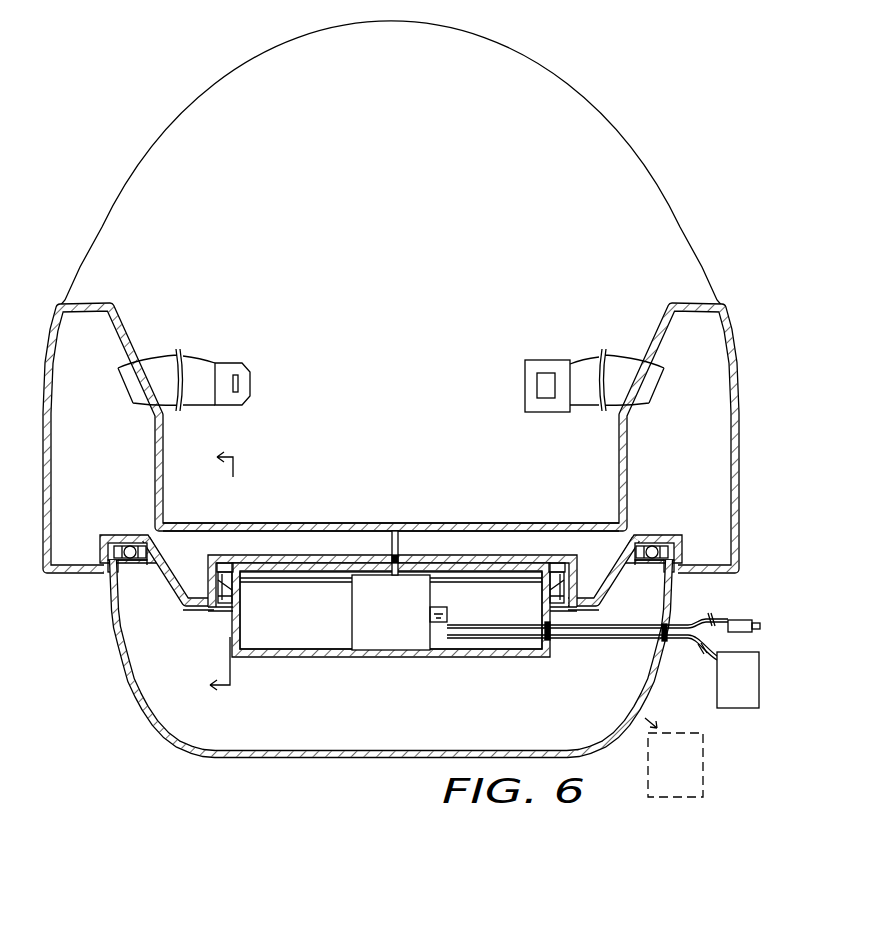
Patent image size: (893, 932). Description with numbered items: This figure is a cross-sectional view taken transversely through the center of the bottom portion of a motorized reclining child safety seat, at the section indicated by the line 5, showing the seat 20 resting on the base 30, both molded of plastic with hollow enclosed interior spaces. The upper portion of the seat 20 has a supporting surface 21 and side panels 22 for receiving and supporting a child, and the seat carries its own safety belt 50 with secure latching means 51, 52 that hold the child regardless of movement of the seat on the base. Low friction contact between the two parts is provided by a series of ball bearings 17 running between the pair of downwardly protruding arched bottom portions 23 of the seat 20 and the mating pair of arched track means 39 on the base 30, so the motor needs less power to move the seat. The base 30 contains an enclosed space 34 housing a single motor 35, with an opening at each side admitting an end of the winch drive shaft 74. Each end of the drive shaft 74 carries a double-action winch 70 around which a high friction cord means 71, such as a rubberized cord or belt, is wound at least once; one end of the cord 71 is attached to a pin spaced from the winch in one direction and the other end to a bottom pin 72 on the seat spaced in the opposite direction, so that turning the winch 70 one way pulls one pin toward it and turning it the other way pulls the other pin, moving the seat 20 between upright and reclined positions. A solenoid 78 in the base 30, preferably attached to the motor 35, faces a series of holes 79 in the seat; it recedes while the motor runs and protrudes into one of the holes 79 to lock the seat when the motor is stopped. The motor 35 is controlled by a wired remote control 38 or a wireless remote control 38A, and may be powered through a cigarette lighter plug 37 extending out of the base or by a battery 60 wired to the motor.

The seat 20 is at (588, 107).
The supporting surface 21 is at (358, 522).
The side panels 22 is at (136, 370).
The downwardly protruding arched bottom portions 23 is at (145, 530).
The ball bearings 17 is at (103, 553).
The arched track means 39 is at (130, 564).
The cord means 71 is at (187, 577).
The double-action winch 70 is at (221, 567).
The bottom pin 72 is at (233, 600).
The winch drive shaft 74 is at (343, 585).
The enclosed space 34 is at (518, 643).
The motor 35 is at (405, 644).
The solenoid 78 is at (394, 531).
The series of holes 79 is at (406, 551).
The battery 60 is at (445, 627).
The cigarette lighter plug 37 is at (747, 620).
The remote control 38 is at (717, 676).
The remote control 38A is at (703, 750).
The base 30 is at (130, 692).
The safety belt 50 is at (190, 360).
The latching means 51 is at (243, 367).
The latching means 52 is at (525, 380).
The section line 5 is at (210, 571).